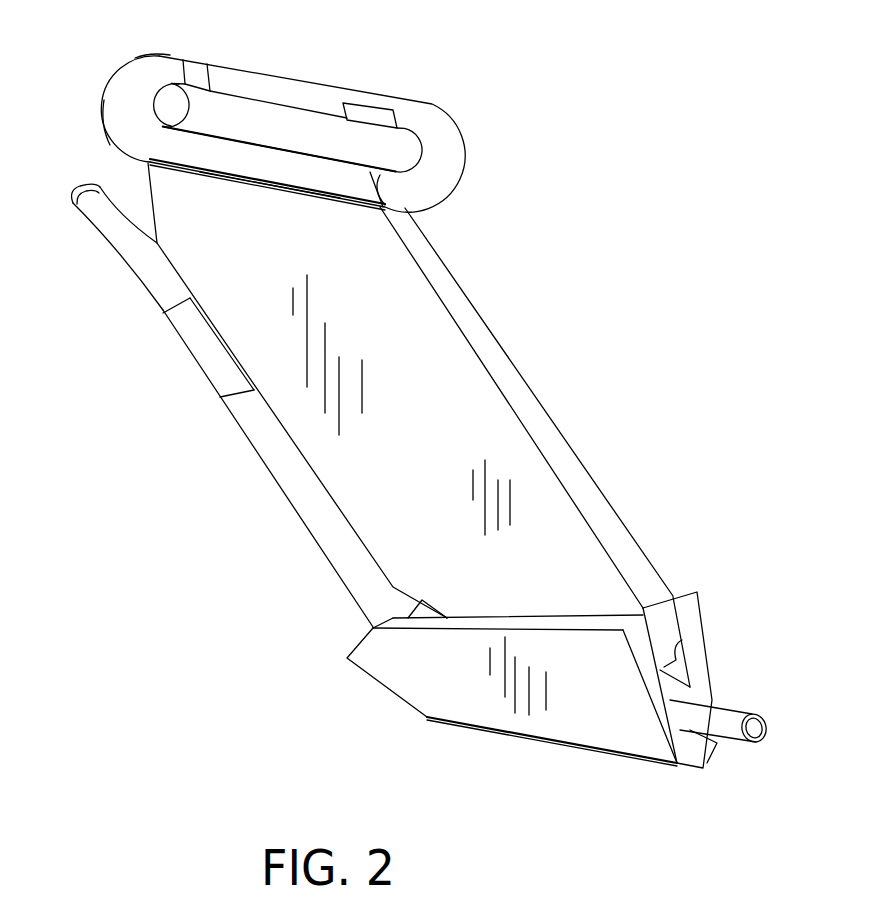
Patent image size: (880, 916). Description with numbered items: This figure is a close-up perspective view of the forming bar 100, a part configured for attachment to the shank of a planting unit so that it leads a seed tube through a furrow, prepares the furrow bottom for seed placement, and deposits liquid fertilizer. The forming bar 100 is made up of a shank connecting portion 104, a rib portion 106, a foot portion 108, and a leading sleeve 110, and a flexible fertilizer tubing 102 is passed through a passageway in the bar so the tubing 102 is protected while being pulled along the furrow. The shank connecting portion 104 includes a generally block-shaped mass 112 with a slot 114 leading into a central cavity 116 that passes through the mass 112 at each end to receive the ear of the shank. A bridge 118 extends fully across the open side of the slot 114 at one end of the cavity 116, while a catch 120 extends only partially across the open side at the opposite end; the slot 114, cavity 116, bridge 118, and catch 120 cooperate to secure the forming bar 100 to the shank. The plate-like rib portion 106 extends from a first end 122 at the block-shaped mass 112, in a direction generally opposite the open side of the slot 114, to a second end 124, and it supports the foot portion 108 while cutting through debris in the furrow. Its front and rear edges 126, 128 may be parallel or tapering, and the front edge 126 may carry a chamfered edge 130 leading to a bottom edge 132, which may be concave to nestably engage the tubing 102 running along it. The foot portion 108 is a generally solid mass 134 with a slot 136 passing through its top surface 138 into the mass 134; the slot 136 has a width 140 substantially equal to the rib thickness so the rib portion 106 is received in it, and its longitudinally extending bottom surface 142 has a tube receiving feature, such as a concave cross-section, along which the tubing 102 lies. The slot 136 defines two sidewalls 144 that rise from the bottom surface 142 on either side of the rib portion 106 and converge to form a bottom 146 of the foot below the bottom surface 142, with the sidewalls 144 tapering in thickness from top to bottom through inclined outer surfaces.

The forming bar 100 is at (628, 187).
The fertilizer tubing 102 is at (127, 248).
The shank connecting portion 104 is at (378, 82).
The rib portion 106 is at (512, 370).
The foot portion 108 is at (480, 736).
The leading sleeve 110 is at (250, 456).
The block-shaped mass 112 is at (108, 131).
The slot 114 is at (238, 113).
The central cavity 116 is at (386, 153).
The bridge 118 is at (150, 76).
The catch 120 is at (384, 102).
The first end 122 is at (266, 192).
The second end 124 is at (544, 607).
The front edge 126 is at (253, 390).
The rear edge 128 is at (466, 310).
The chamfered edge 130 is at (413, 600).
The bottom edge 132 is at (690, 687).
The solid mass 134 is at (388, 668).
The slot 136 is at (658, 628).
The top surface 138 is at (673, 595).
The width 140 is at (682, 640).
The bottom surface 142 is at (713, 743).
The sidewalls 144 is at (614, 720).
The bottom 146 is at (707, 767).